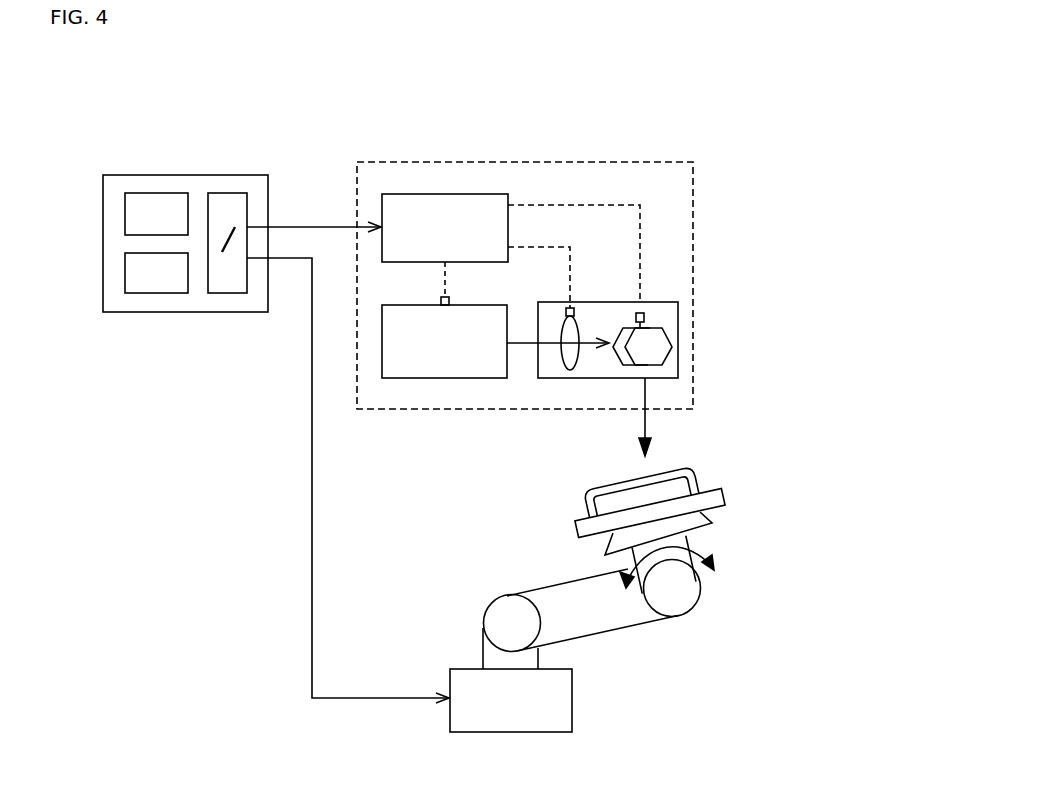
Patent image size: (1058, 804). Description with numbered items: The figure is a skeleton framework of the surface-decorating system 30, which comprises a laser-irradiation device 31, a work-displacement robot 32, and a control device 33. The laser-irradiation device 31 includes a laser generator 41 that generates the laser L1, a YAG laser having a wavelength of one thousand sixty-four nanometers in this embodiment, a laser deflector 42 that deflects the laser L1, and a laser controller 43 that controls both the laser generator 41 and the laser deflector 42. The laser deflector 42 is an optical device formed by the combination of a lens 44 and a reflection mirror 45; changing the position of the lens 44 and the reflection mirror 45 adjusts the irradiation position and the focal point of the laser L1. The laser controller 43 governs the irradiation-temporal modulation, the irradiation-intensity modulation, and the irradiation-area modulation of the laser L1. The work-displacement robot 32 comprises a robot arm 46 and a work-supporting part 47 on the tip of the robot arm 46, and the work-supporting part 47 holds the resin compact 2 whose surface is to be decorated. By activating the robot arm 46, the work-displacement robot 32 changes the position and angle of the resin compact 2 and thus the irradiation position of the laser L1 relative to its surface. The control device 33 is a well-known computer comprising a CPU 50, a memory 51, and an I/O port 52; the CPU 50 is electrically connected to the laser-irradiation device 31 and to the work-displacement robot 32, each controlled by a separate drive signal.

The surface-decorating system 30 is at (751, 116).
The laser-irradiation device 31 is at (645, 162).
The work-displacement robot 32 is at (582, 622).
The control device 33 is at (235, 175).
The laser generator 41 is at (445, 378).
The laser deflector 42 is at (603, 302).
The laser controller 43 is at (445, 194).
The lens 44 is at (570, 358).
The reflection mirror 45 is at (652, 341).
The robot arm 46 is at (558, 598).
The work-supporting part 47 is at (713, 498).
The CPU 50 is at (158, 193).
The memory 51 is at (158, 293).
The I/O port 52 is at (227, 293).
The resin compact 2 is at (603, 492).
The laser L1 is at (640, 420).